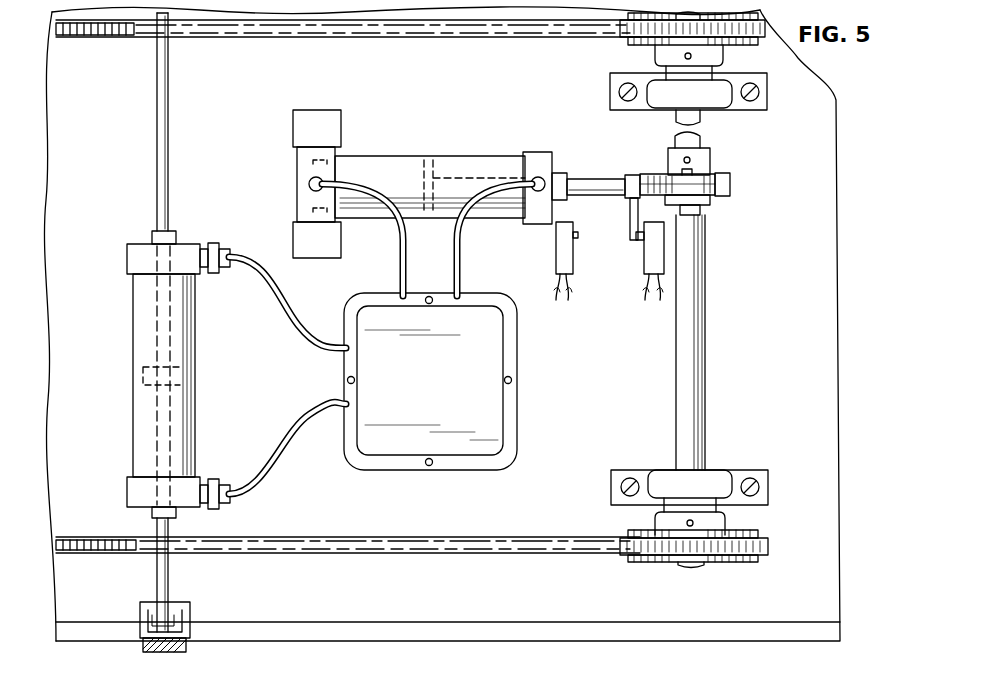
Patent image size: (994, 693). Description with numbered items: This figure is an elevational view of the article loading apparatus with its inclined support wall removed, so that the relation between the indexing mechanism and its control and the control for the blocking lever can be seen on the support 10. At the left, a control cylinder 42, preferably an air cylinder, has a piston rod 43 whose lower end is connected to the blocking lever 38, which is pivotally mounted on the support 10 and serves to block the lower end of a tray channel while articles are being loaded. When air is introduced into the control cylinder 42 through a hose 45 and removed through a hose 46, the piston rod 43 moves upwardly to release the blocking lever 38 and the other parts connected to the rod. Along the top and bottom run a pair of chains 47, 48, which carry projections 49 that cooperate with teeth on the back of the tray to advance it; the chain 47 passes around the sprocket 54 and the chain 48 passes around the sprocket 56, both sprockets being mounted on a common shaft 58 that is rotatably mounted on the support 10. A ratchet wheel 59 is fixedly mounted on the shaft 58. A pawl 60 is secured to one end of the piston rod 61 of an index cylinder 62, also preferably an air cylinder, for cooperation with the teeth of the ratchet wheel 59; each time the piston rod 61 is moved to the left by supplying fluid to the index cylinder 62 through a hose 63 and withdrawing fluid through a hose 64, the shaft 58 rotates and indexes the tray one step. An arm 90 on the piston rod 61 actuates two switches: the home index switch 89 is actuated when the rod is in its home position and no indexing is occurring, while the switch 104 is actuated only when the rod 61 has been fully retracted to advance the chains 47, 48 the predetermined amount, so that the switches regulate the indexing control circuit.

The support 10 is at (481, 622).
The blocking lever 38 is at (196, 613).
The control cylinder 42 is at (128, 340).
The piston rod 43 is at (156, 150).
The hose 45 is at (278, 458).
The hose 46 is at (290, 312).
The chain 47 is at (456, 37).
The chain 48 is at (428, 555).
The projections 49 is at (122, 30).
The sprocket 54 is at (762, 38).
The sprocket 56 is at (768, 553).
The shaft 58 is at (712, 378).
The ratchet wheel 59 is at (726, 178).
The pawl 60 is at (719, 194).
The piston rod 61 is at (590, 179).
The index cylinder 62 is at (436, 150).
The hose 63 is at (462, 250).
The hose 64 is at (398, 245).
The home index switch 89 is at (644, 256).
The arm 90 is at (629, 214).
The switch 104 is at (554, 250).